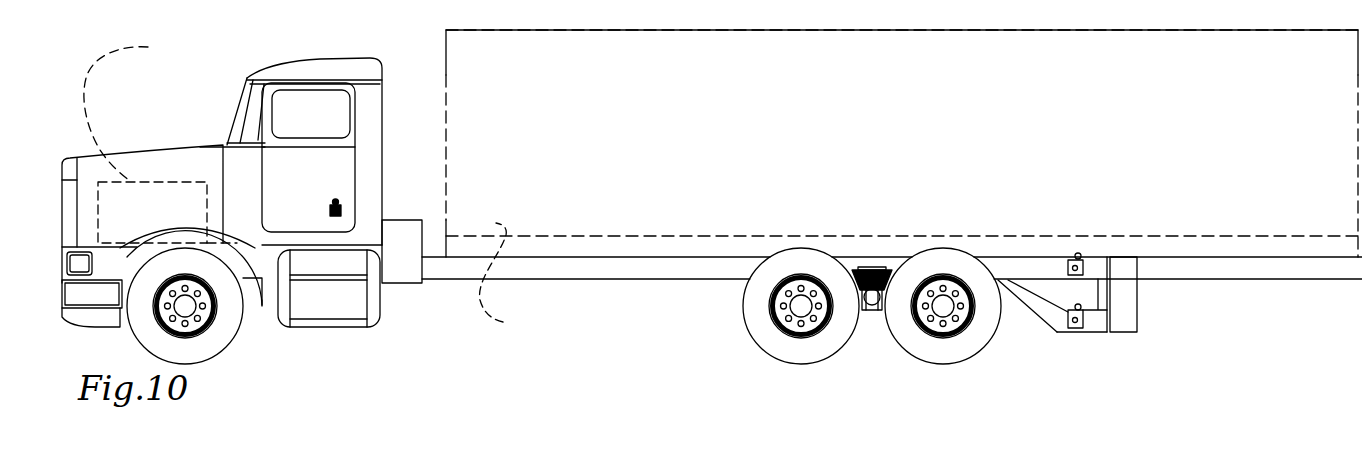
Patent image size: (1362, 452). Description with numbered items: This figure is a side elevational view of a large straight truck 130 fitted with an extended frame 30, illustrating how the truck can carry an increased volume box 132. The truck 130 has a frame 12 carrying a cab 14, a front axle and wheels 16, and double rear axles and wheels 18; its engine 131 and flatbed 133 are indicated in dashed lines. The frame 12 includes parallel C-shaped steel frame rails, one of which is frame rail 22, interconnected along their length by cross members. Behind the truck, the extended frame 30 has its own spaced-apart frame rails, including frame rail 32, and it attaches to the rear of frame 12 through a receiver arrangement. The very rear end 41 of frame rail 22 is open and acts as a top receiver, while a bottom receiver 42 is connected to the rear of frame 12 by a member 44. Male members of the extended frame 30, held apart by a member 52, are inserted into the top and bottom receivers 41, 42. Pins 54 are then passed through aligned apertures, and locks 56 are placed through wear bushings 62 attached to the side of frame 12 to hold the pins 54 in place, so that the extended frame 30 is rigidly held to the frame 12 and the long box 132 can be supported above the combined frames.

The frame 12 is at (658, 281).
The cab 14 is at (253, 73).
The front axle and wheels 16 is at (217, 347).
The rear axle and wheels 18 is at (766, 343).
The frame rail 22 is at (600, 279).
The extended frame 30 is at (1247, 251).
The frame rail 32 is at (1217, 280).
The rear end 41 is at (1100, 256).
The bottom receiver 42 is at (1094, 332).
The member 44 is at (1043, 318).
The member 52 is at (1128, 303).
The pin 54 is at (1068, 262).
The lock 56 is at (1078, 253).
The wear bushing 62 is at (1085, 265).
The large straight truck 130 is at (172, 102).
The engine 131 is at (131, 110).
The increased volume box 132 is at (895, 123).
The flatbed 133 is at (508, 279).